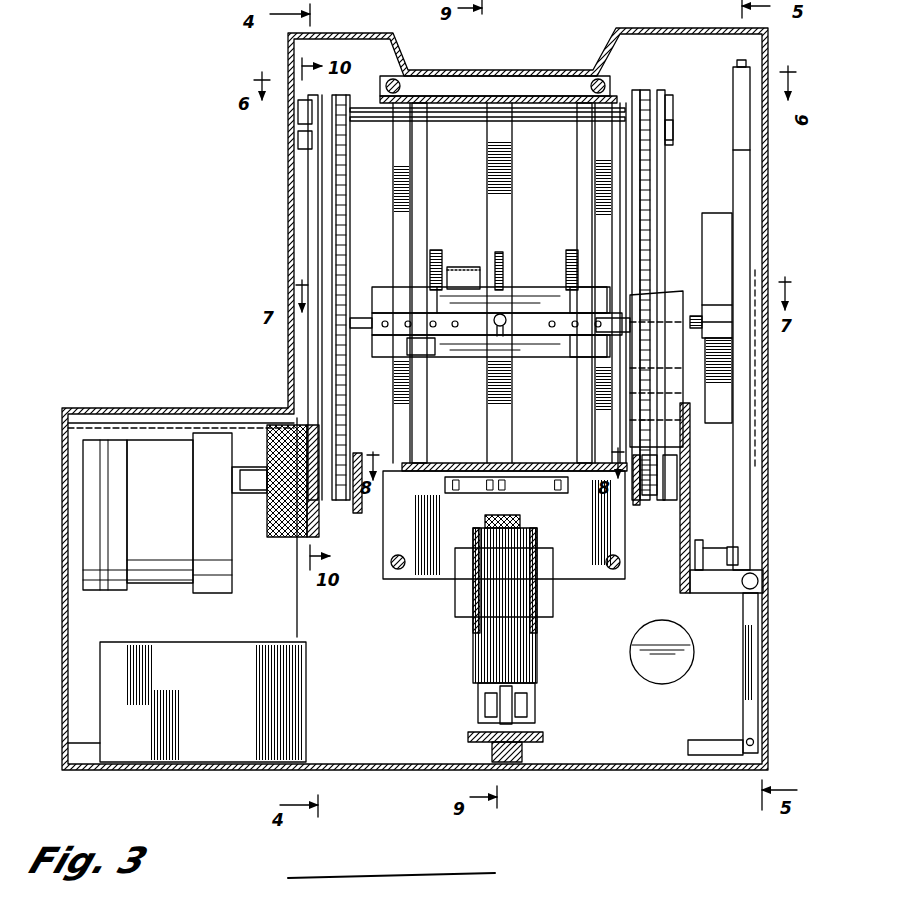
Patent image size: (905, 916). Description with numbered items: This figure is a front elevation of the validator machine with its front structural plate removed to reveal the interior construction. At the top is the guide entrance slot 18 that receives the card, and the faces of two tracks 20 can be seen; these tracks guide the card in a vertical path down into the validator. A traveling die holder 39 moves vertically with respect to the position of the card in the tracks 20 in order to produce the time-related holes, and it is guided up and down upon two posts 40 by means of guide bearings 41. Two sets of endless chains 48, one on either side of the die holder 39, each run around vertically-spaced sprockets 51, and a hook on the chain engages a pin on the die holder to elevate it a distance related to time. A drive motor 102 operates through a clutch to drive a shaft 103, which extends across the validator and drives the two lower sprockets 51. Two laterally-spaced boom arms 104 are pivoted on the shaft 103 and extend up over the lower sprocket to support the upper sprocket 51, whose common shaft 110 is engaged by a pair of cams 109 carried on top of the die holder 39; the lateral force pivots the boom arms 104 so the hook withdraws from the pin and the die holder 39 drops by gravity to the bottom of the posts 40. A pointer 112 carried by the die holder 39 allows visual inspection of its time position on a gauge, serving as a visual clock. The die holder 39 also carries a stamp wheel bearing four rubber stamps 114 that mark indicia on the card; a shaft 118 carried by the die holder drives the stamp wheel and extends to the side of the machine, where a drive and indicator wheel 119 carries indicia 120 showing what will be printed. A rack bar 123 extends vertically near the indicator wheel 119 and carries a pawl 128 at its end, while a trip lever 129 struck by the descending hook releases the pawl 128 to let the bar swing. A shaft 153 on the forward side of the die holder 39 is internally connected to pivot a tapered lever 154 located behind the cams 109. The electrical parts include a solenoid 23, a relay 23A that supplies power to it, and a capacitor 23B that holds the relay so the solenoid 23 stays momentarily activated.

The guide entrance slot 18 is at (500, 78).
The tracks 20 is at (400, 230).
The solenoid 23 is at (535, 632).
The relay 23A is at (226, 697).
The capacitor 23B is at (660, 628).
The traveling die holder 39 is at (530, 292).
The posts 40 is at (582, 192).
The guide bearings 41 is at (412, 295).
The endless chains 48 is at (340, 185).
The sprockets 51 is at (318, 127).
The drive motor 102 is at (175, 519).
The shaft 103 is at (375, 478).
The boom arms 104 is at (320, 164).
The cams 109 is at (437, 250).
The shaft 110 is at (463, 112).
The pointer 112 is at (612, 322).
The rubber stamps 114 is at (459, 266).
The shaft 118 is at (358, 318).
The drive and indicator wheel 119 is at (712, 212).
The indicia 120 is at (730, 334).
The rack bar 123 is at (752, 607).
The pawl 128 is at (740, 552).
The trip lever 129 is at (690, 477).
The shaft 153 is at (507, 326).
The tapered lever 154 is at (504, 266).